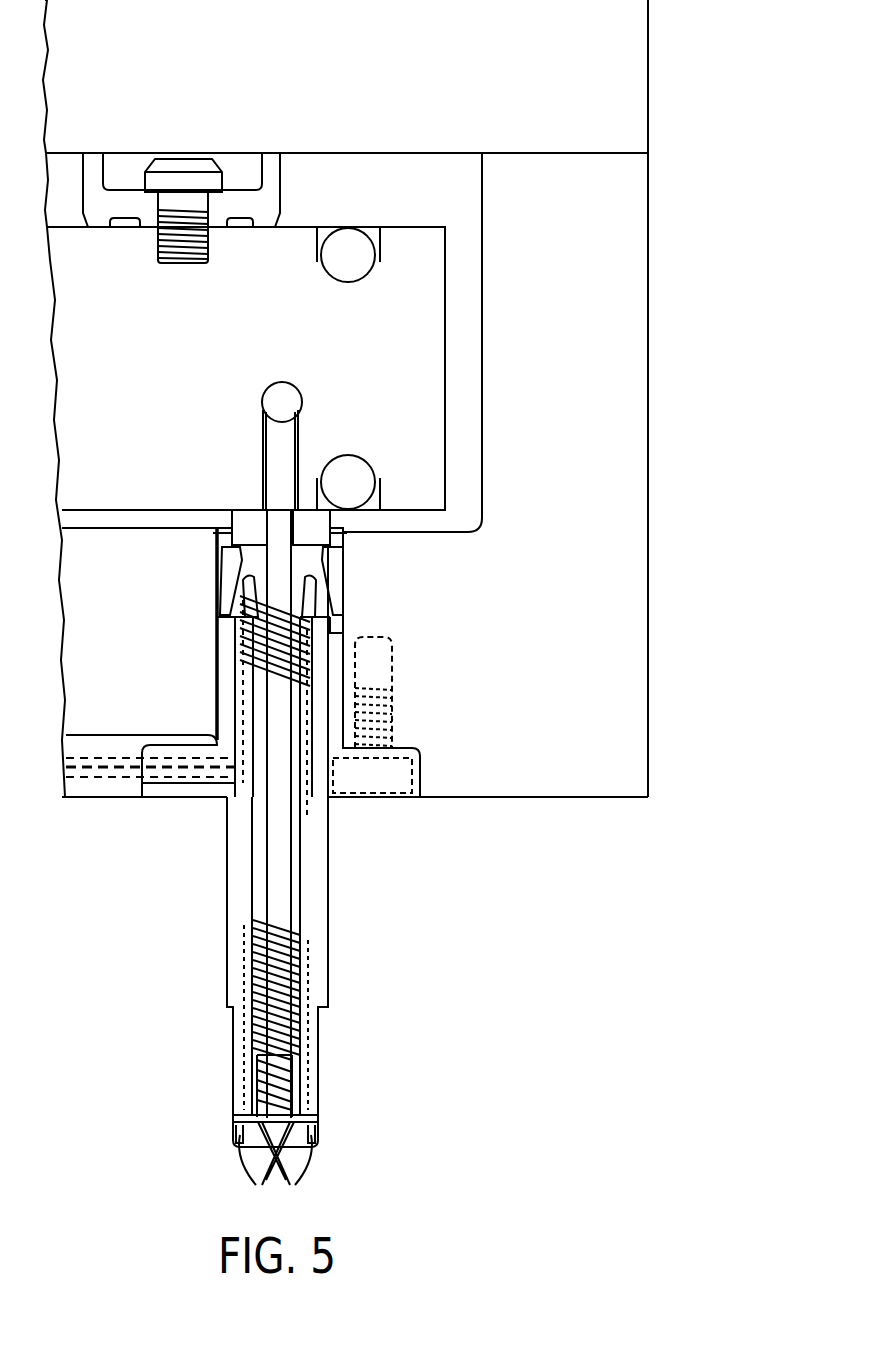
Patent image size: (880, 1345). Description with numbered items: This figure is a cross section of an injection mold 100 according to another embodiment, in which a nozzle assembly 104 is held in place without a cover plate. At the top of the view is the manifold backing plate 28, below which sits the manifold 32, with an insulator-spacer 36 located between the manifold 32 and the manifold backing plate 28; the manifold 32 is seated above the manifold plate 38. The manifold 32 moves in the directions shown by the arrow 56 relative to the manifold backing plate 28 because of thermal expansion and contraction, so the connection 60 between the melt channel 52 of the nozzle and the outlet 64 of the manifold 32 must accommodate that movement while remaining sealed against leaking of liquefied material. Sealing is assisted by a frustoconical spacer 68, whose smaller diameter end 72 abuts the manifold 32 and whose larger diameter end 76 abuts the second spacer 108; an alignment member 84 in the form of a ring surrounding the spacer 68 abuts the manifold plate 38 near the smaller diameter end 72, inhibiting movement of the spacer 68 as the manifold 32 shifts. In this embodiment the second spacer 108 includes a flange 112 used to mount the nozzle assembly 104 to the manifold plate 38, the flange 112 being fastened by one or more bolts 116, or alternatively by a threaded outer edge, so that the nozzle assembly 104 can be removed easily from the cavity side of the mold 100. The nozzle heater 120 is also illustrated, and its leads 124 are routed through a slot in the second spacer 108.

The manifold backing plate 28 is at (351, 85).
The manifold 32 is at (401, 355).
The insulator-spacer 36 is at (282, 184).
The manifold plate 38 is at (581, 281).
The melt channel 52 is at (274, 700).
The arrow 56 is at (304, 356).
The connection 60 is at (285, 510).
The outlet 64 is at (276, 432).
The frustoconical spacer 68 is at (261, 543).
The smaller diameter end 72 is at (246, 510).
The larger diameter end 76 is at (222, 611).
The alignment member 84 is at (219, 549).
The injection mold 100 is at (681, 320).
The nozzle assembly 104 is at (329, 970).
The second spacer 108 is at (224, 655).
The flange 112 is at (178, 792).
The bolt 116 is at (422, 771).
The nozzle heater 120 is at (310, 646).
The leads 124 is at (150, 766).